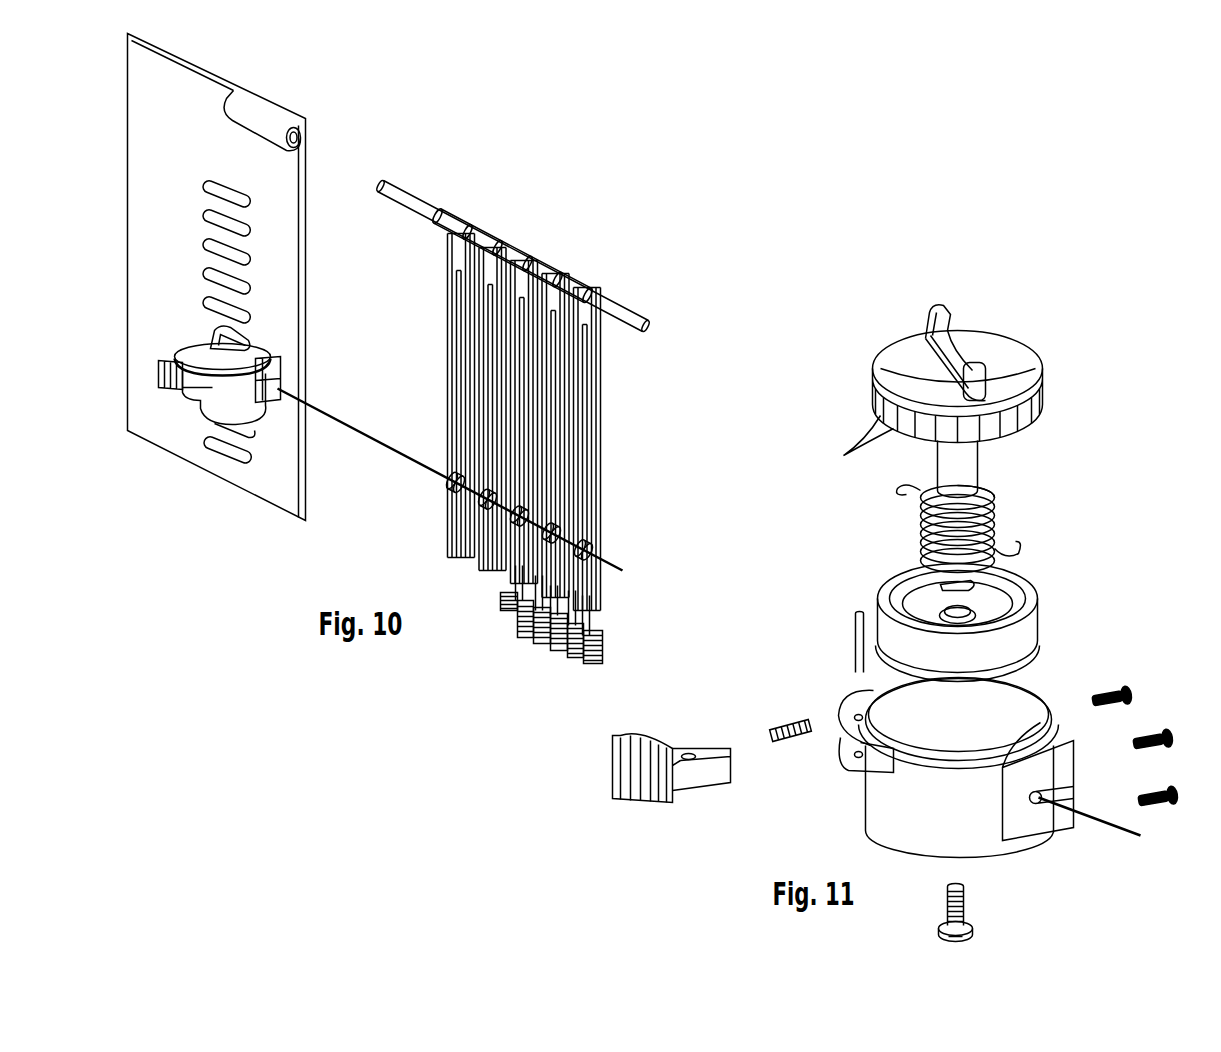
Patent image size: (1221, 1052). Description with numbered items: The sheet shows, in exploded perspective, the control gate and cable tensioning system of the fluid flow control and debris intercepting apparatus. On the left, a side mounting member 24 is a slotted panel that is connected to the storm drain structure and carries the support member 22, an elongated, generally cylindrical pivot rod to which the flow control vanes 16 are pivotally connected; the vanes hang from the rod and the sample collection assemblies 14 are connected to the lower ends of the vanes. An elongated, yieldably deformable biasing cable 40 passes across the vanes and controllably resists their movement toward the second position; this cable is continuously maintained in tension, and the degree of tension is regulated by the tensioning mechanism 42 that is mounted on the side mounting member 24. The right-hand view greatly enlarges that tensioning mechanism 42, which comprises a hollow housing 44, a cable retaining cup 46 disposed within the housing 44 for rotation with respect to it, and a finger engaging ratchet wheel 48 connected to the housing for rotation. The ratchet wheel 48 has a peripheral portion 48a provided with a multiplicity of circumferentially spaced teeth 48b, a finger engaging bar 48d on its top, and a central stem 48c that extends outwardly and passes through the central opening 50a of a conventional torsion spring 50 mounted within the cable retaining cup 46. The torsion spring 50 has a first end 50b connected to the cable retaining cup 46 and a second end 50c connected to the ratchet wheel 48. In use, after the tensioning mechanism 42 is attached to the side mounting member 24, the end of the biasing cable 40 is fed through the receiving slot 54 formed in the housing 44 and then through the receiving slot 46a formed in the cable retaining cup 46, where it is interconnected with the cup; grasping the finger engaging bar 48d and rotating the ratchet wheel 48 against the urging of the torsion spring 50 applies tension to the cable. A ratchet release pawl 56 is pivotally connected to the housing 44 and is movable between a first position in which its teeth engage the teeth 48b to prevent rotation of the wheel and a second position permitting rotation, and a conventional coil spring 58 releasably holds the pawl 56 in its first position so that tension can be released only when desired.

In FIG. 10, the sample collection assemblies 14 is at (580, 663).
In FIG. 10, the flow control vanes 16 is at (443, 347).
In FIG. 10, the support member 22 is at (612, 307).
In FIG. 10, the side mounting members 24 is at (155, 240).
In FIG. 10, the biasing cable 40 is at (375, 447).
In FIG. 11, the biasing cable 40 is at (1108, 825).
In FIG. 10, the tensioning mechanism 42 is at (175, 345).
In FIG. 11, the tensioning mechanism 42 is at (1004, 322).
In FIG. 11, the housing 44 is at (980, 767).
In FIG. 11, the cable retaining cup 46 is at (965, 621).
In FIG. 11, the receiving slot 46a is at (948, 584).
In FIG. 11, the finger engaging ratchet wheel 48 is at (963, 382).
In FIG. 11, the peripheral portion 48a is at (1040, 360).
In FIG. 11, the teeth 48b is at (900, 437).
In FIG. 11, the central stem 48c is at (965, 470).
In FIG. 11, the finger engaging bar 48d is at (938, 312).
In FIG. 11, the torsion spring 50 is at (956, 525).
In FIG. 11, the central opening 50a is at (990, 486).
In FIG. 11, the first end 50b is at (1025, 549).
In FIG. 11, the second end 50c is at (897, 487).
In FIG. 11, the receiving slot 54 is at (1035, 805).
In FIG. 11, the ratchet release pawl 56 is at (655, 800).
In FIG. 11, the coil spring 58 is at (785, 722).